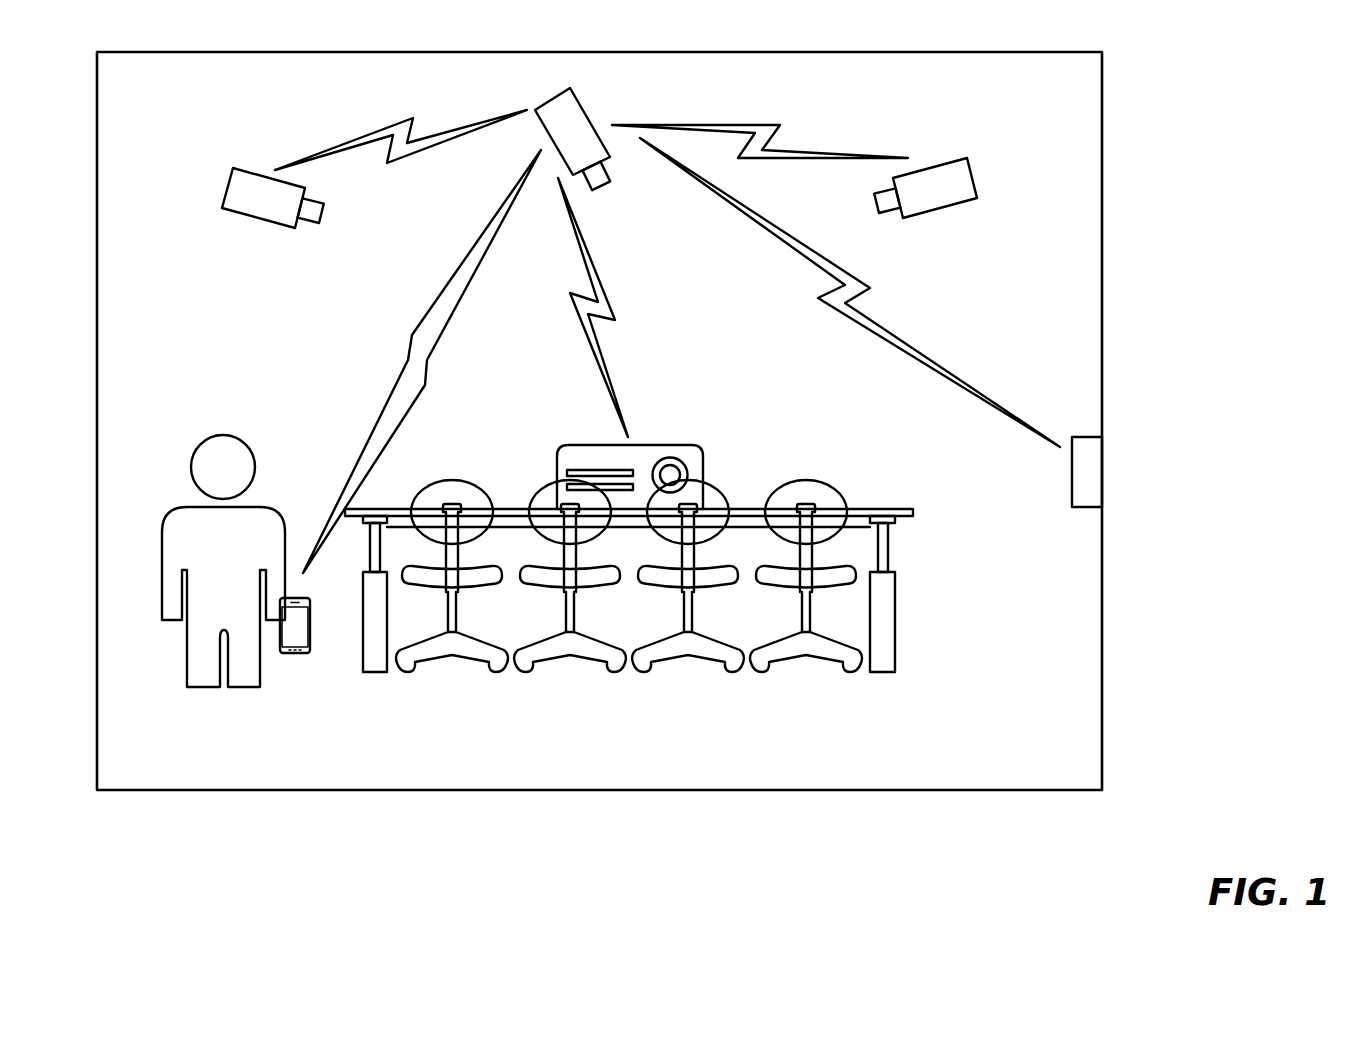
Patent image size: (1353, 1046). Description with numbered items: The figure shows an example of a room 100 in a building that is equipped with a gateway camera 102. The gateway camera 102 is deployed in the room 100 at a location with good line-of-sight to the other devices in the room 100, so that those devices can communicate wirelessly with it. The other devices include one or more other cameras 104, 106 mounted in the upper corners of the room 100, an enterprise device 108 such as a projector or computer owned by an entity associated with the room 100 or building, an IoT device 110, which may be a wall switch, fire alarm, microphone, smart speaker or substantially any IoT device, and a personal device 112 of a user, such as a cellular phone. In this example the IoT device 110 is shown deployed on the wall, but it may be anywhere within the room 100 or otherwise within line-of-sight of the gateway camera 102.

The room 100 is at (865, 52).
The gateway camera 102 is at (588, 110).
The other camera 104 is at (255, 175).
The other camera 106 is at (927, 165).
The enterprise device 108 is at (658, 443).
The IoT device 110 is at (1082, 436).
The personal device 112 is at (296, 654).